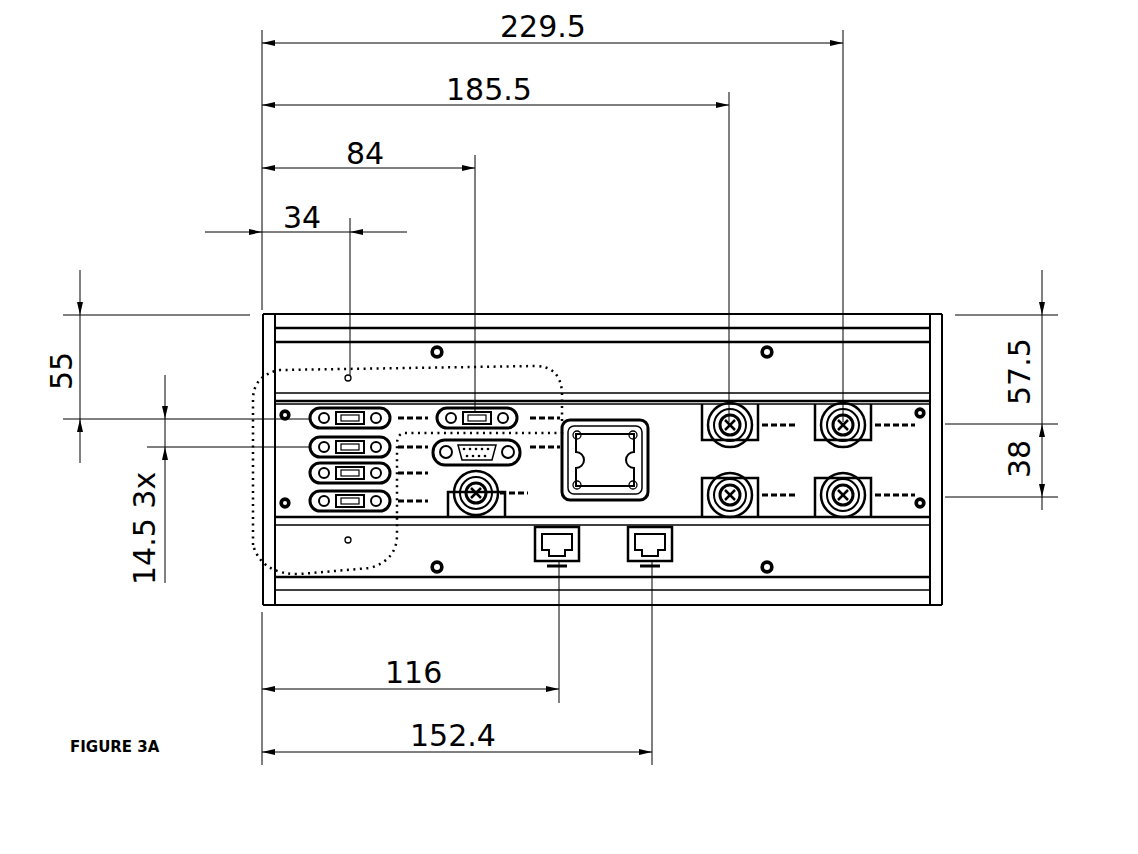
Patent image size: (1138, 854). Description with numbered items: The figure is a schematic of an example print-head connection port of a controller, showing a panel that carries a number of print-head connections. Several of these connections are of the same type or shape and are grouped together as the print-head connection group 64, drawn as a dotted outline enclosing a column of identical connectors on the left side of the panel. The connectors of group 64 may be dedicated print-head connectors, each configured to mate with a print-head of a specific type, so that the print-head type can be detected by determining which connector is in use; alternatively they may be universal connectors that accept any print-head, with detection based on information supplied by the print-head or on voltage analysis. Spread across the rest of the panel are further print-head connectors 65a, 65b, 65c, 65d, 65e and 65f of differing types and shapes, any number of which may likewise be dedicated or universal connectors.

The print-head connection group 64 is at (257, 483).
The print-head connector 65a is at (515, 456).
The print-head connector 65b is at (496, 522).
The print-head connector 65c is at (704, 412).
The print-head connector 65d is at (817, 417).
The print-head connector 65e is at (712, 465).
The print-head connector 65f is at (853, 474).